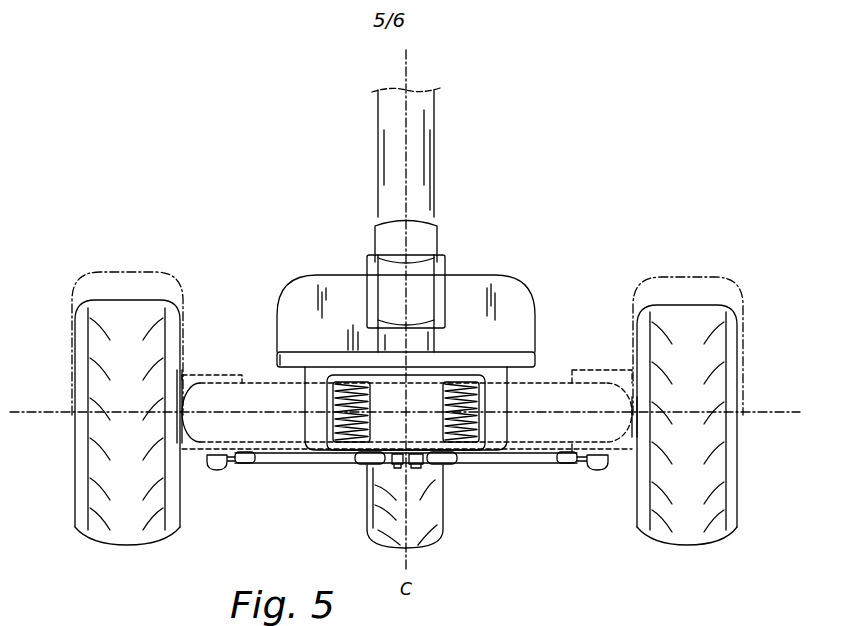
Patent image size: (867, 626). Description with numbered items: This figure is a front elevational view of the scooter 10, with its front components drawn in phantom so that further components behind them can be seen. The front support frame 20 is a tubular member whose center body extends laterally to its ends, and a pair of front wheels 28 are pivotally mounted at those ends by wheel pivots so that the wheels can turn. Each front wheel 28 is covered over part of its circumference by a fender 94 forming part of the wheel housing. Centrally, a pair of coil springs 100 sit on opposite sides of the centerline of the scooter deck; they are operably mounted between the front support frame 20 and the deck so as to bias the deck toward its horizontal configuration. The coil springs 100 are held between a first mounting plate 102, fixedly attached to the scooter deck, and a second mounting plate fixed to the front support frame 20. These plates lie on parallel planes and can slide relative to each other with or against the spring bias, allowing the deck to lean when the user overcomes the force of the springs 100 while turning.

The scooter 10 is at (152, 104).
The front support frame 20 is at (262, 385).
The front wheel 28 is at (88, 515).
The fender 94 is at (113, 272).
The coil spring 100 is at (335, 425).
The first mounting plate 102 is at (503, 405).